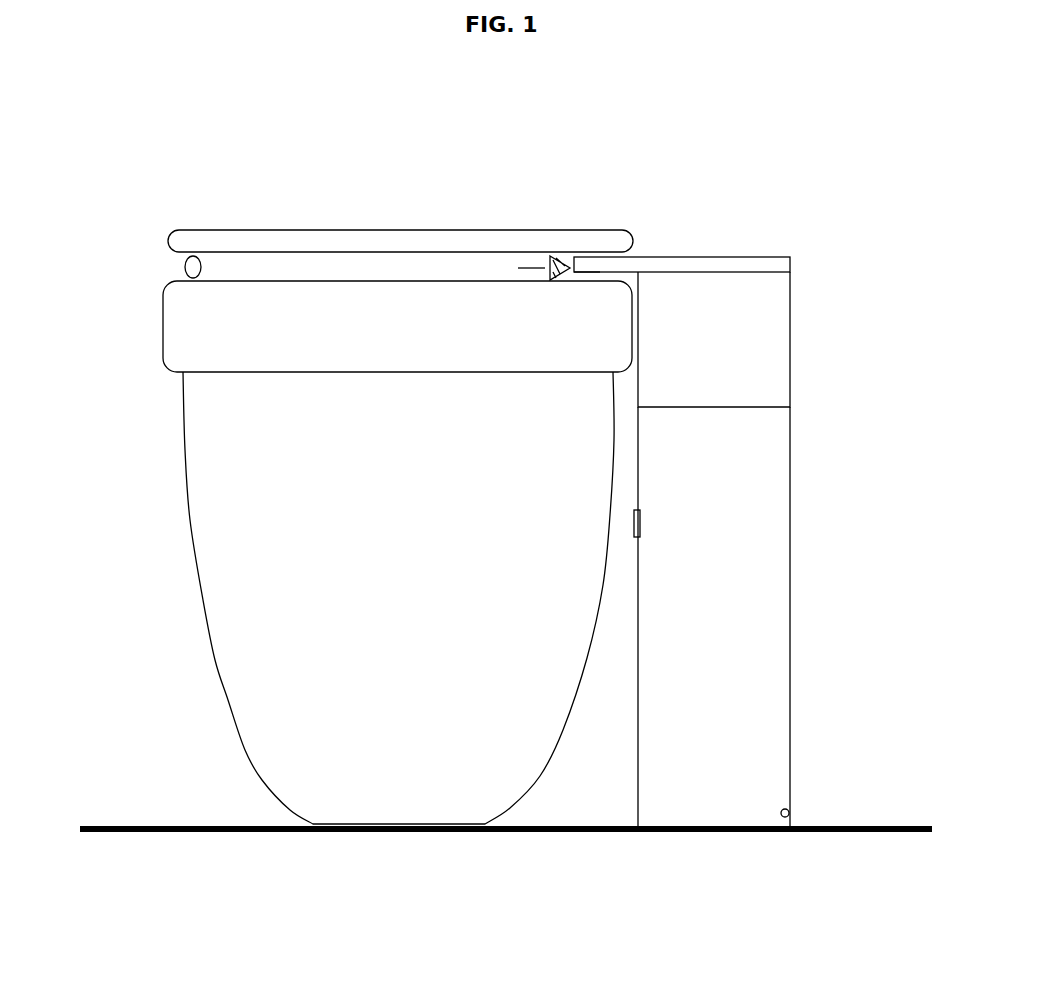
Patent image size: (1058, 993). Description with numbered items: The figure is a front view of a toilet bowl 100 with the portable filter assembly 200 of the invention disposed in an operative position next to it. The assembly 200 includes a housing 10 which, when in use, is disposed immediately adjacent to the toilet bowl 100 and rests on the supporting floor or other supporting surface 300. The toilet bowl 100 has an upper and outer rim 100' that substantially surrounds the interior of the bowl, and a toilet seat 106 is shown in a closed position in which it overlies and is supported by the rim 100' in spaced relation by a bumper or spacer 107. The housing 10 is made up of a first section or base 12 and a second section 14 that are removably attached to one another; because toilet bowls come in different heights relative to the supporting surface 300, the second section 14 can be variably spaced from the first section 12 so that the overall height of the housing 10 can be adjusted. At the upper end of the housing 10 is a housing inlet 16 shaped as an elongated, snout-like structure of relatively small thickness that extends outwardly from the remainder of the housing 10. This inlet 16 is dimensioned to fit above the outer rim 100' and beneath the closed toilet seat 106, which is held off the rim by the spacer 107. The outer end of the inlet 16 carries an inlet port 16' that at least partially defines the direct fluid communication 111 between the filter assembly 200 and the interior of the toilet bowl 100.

The housing 10 is at (850, 446).
The first section or base 12 is at (755, 638).
The second section 14 is at (755, 325).
The housing inlet 16 is at (682, 229).
The inlet port 16' is at (592, 218).
The toilet bowl 100 is at (337, 598).
The upper and outer rim 100' is at (345, 364).
The toilet seat 106 is at (165, 220).
The bumper or spacer 107 is at (177, 268).
The direct fluid communication 111 is at (532, 265).
The portable filter assembly 200 is at (838, 214).
The supporting floor or other supporting surface 300 is at (882, 826).